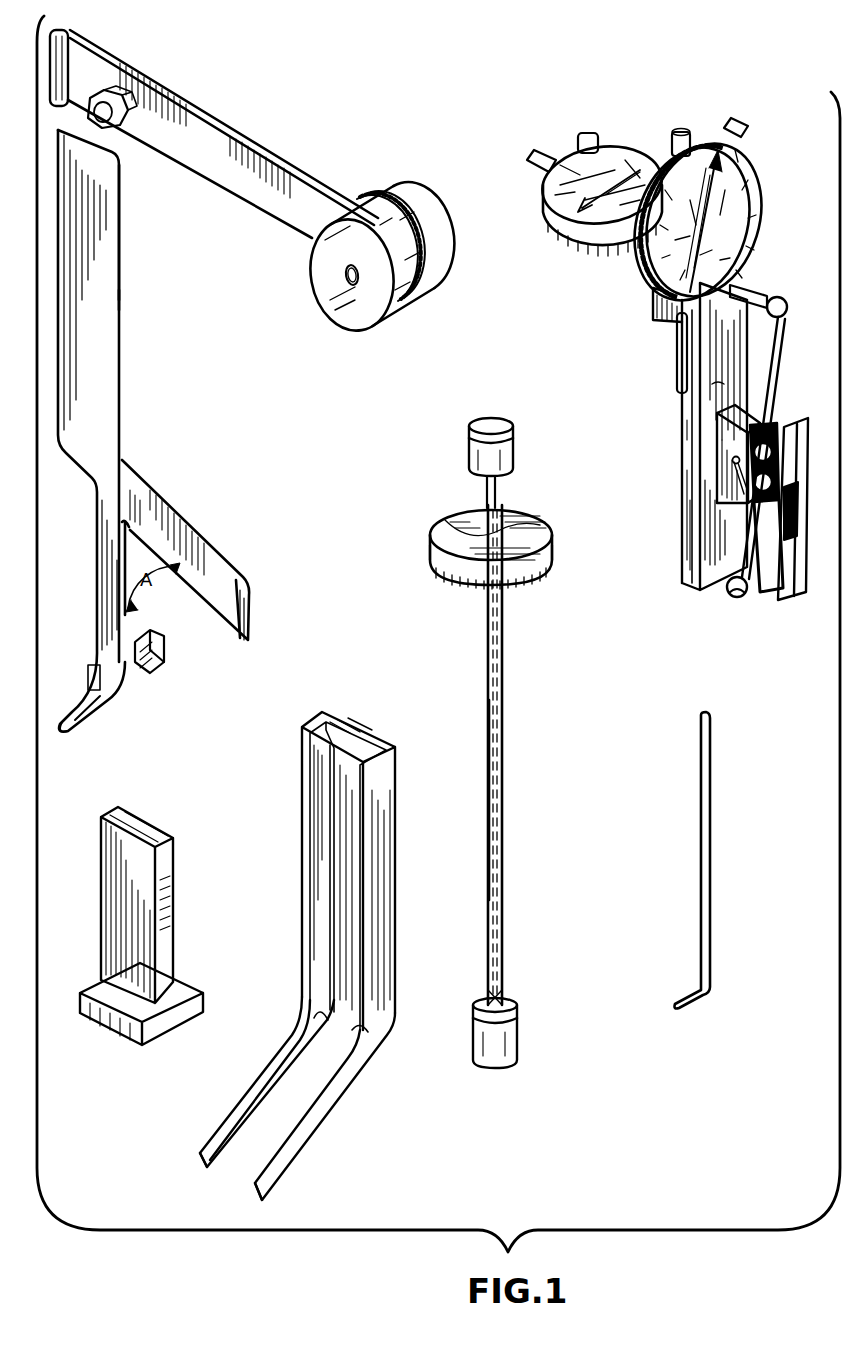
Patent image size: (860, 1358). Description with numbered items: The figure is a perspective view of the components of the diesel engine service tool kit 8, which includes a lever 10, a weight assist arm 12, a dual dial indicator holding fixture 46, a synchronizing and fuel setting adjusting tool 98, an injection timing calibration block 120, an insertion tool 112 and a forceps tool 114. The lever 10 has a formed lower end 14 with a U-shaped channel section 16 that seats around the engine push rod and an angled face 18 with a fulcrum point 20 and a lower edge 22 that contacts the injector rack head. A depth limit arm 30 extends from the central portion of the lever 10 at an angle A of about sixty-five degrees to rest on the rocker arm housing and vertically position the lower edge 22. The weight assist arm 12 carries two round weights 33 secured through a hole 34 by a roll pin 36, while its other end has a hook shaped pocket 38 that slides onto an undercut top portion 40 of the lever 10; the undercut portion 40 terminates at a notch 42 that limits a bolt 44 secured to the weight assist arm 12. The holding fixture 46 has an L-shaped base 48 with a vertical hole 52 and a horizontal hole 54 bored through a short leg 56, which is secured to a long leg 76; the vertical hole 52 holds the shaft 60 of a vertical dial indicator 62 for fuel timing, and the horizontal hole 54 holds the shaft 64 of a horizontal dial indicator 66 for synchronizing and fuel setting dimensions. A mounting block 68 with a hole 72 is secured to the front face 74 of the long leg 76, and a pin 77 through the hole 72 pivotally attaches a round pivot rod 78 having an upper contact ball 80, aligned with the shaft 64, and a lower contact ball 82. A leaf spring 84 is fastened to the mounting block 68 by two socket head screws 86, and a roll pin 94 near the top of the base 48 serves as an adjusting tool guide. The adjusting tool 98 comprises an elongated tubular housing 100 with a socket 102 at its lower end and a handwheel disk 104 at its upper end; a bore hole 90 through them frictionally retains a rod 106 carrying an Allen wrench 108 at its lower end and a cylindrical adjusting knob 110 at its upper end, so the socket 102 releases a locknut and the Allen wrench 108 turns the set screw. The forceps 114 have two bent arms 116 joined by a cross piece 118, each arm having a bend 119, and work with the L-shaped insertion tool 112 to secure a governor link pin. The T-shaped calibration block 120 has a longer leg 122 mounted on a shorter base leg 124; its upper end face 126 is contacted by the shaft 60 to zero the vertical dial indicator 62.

The diesel engine service tool kit 8 is at (456, 1262).
The lever 10 is at (148, 445).
The weight assist arm 12 is at (278, 128).
The formed lower end 14 is at (92, 583).
The U-shaped channel section 16 is at (148, 648).
The angled face 18 is at (102, 702).
The fulcrum point 20 is at (140, 680).
The lower edge 22 is at (70, 735).
The depth limit arm 30 is at (205, 553).
The round weights 33 is at (402, 318).
The hole 34 is at (344, 282).
The roll pin 36 is at (352, 285).
The hook shaped pocket 38 is at (70, 33).
The undercut top portion 40 is at (119, 250).
The notch 42 is at (122, 298).
The bolt 44 is at (135, 100).
The dual dial indicator holding fixture 46 is at (657, 575).
The L-shaped base 48 is at (680, 453).
The vertical hole 52 is at (668, 305).
The horizontal hole 54 is at (756, 258).
The short leg 56 is at (652, 300).
The shaft 60 is at (678, 388).
The vertical dial indicator 62 is at (716, 130).
The shaft 64 is at (725, 370).
The horizontal dial indicator 66 is at (626, 142).
The mounting block 68 is at (715, 436).
The hole 72 is at (732, 464).
The front face 74 is at (719, 374).
The long leg 76 is at (688, 588).
The pin 77 is at (724, 522).
The pivot rod 78 is at (775, 385).
The upper contact ball 80 is at (788, 307).
The contact ball 82 is at (742, 600).
The leaf spring 84 is at (795, 560).
The socket head screws 86 is at (770, 440).
The bore hole 90 is at (480, 530).
The roll pin 94 is at (790, 298).
The synchronizing and fuel setting adjusting tool 98 is at (534, 826).
The elongated tubular housing 100 is at (503, 858).
The socket 102 is at (518, 1030).
The handwheel disk 104 is at (545, 585).
The rod 106 is at (498, 484).
The Allen wrench 108 is at (512, 980).
The cylindrical adjusting knob 110 is at (496, 420).
The insertion tool 112 is at (711, 875).
The forceps tool 114 is at (408, 942).
The bent arms 116 is at (345, 995).
The cross piece 118 is at (332, 712).
The bend 119 is at (362, 1032).
The injection timing calibration block 120 is at (195, 840).
The longer leg 122 is at (118, 913).
The shorter base leg 124 is at (110, 1030).
The upper end face 126 is at (140, 826).